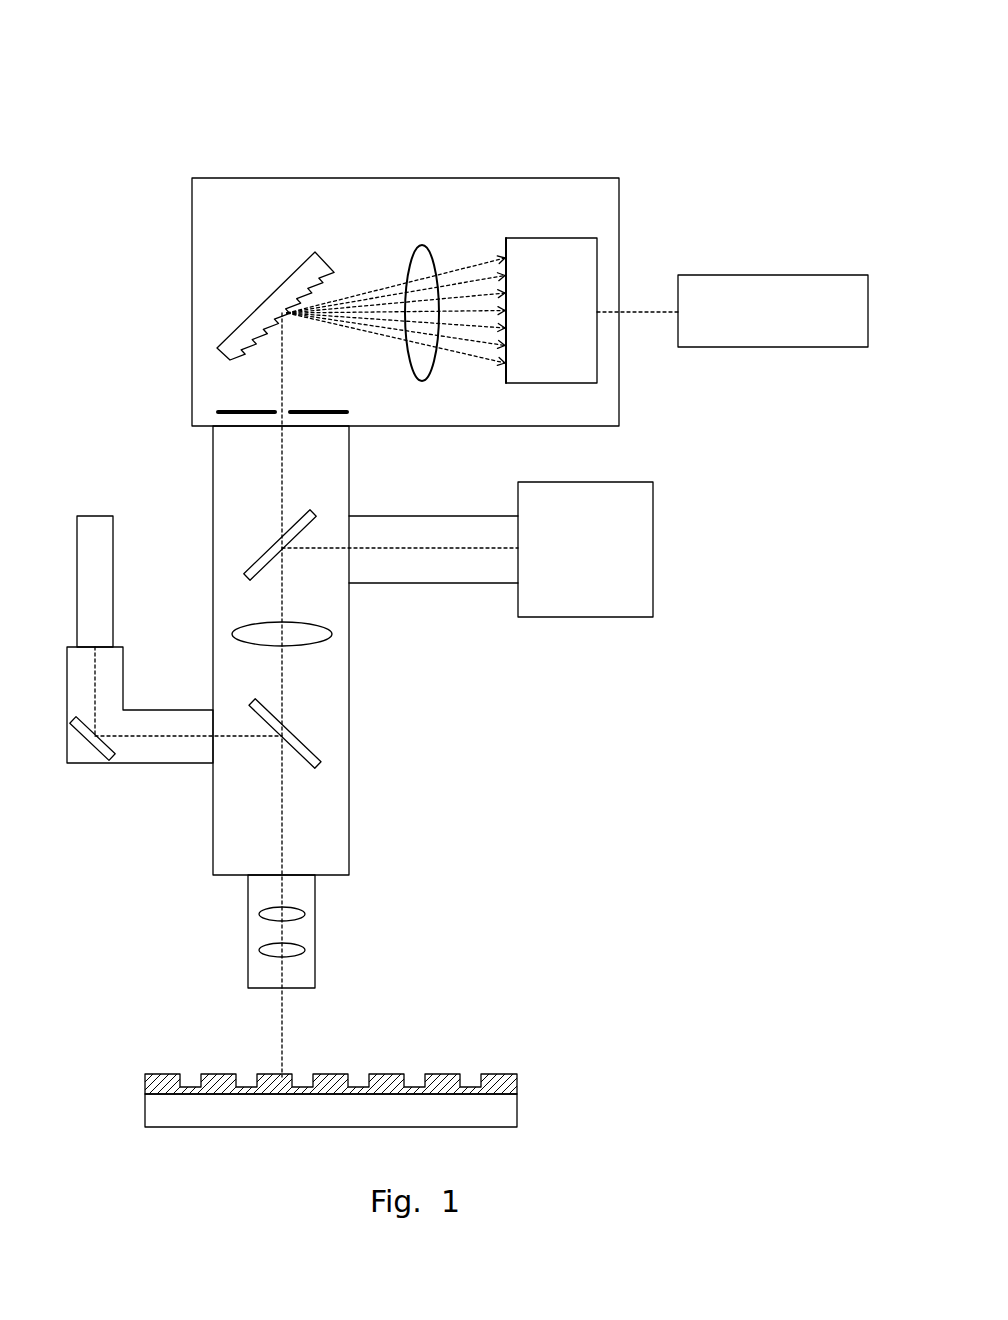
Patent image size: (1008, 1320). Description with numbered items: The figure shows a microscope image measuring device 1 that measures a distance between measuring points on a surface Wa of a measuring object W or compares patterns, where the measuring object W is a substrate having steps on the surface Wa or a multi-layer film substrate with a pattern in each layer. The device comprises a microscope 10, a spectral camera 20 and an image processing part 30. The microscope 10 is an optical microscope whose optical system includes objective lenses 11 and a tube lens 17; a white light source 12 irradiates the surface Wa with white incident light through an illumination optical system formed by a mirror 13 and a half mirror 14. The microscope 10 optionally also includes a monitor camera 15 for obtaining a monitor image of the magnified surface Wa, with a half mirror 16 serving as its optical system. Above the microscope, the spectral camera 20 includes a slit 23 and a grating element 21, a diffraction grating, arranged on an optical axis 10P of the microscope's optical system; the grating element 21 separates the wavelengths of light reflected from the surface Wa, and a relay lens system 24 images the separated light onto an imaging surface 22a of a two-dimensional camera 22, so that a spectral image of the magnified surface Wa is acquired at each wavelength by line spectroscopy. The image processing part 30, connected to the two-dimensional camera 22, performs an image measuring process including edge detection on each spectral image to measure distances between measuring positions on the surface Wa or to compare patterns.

The microscope image measuring device 1 is at (729, 116).
The microscope 10 is at (395, 717).
The optical axis 10P is at (282, 398).
The objective lenses 11 is at (305, 950).
The white light source 12 is at (93, 515).
The mirror 13 is at (110, 762).
The half mirror 14 is at (257, 700).
The monitor camera 15 is at (653, 530).
The half mirror 16 is at (313, 513).
The tube lens 17 is at (332, 634).
The spectral camera 20 is at (385, 178).
The grating element 21 is at (318, 250).
The two-dimensional camera 22 is at (553, 238).
The imaging surface 22a is at (505, 248).
The slit 23 is at (218, 412).
The relay lens system 24 is at (422, 381).
The image processing part 30 is at (785, 275).
The measuring object W is at (512, 1041).
The surface Wa is at (380, 1074).